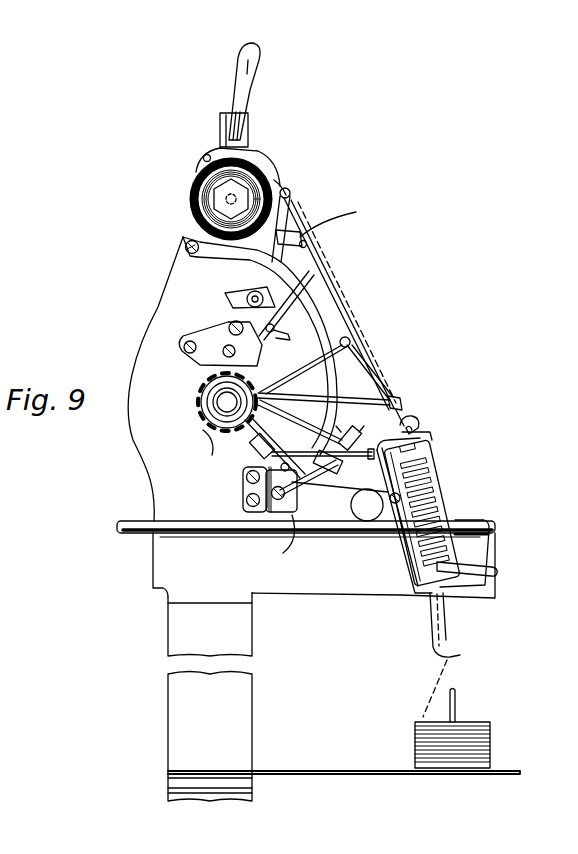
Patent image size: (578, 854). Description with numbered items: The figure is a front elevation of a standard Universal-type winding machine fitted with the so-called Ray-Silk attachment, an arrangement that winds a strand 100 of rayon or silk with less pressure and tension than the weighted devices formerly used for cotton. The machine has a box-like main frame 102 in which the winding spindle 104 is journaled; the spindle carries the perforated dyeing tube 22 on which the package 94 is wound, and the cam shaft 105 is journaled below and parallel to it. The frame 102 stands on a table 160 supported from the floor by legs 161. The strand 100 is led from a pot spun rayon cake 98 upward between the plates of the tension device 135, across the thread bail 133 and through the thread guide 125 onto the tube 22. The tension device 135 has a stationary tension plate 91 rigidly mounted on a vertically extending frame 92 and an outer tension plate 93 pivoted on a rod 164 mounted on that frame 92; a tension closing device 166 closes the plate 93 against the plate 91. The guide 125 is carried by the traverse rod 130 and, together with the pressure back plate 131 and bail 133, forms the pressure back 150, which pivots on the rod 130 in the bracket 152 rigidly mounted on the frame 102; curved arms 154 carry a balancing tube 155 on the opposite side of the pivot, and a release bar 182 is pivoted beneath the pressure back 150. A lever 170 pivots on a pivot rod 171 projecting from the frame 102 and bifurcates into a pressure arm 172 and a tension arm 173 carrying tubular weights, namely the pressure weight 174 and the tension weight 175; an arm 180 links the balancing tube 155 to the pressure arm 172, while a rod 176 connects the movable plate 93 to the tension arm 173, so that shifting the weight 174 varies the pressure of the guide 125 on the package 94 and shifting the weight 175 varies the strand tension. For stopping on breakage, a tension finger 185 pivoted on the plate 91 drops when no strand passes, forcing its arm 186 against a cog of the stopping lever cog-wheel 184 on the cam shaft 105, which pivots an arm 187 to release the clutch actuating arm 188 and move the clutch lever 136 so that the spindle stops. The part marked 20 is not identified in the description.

The clutch lever 136 is at (262, 66).
The package 94 is at (262, 170).
The spool hub 20 is at (288, 178).
The perforated dyeing tube 22 is at (192, 182).
The winding spindle 104 is at (228, 201).
The thread guide 125 is at (292, 192).
The thread bail 133 is at (303, 236).
The pressure back plate 131 is at (307, 244).
The pressure back 150 is at (358, 212).
The clutch actuating arm 188 is at (345, 325).
The strand 100 is at (362, 326).
The release bar 182 is at (315, 276).
The traverse rod 130 is at (248, 292).
The main frame 102 is at (160, 296).
The balancing tube 155 is at (229, 327).
The curved arms 154 is at (270, 336).
The bracket 152 is at (202, 370).
The cam shaft 105 is at (225, 403).
The stopping lever cog-wheel 184 is at (212, 423).
The arm 187 is at (352, 348).
The arm 180 is at (280, 392).
The arm 186 is at (400, 396).
The rod 176 is at (400, 412).
The tension finger 185 is at (422, 420).
The tension arm 173 is at (258, 434).
The pressure weight 174 is at (325, 462).
The pressure arm 172 is at (336, 440).
The pivot rod 171 is at (244, 500).
The tension weight 175 is at (245, 475).
The lever 170 is at (296, 511).
The tension closing device 166 is at (367, 522).
The vertically extending frame 92 is at (406, 552).
The tension device 135 is at (440, 476).
The outer tension plate 93 is at (446, 498).
The stationary tension plate 91 is at (490, 528).
The rod 164 is at (492, 566).
The table 160 is at (258, 595).
The legs 161 is at (240, 722).
The pot spun rayon cake 98 is at (492, 724).